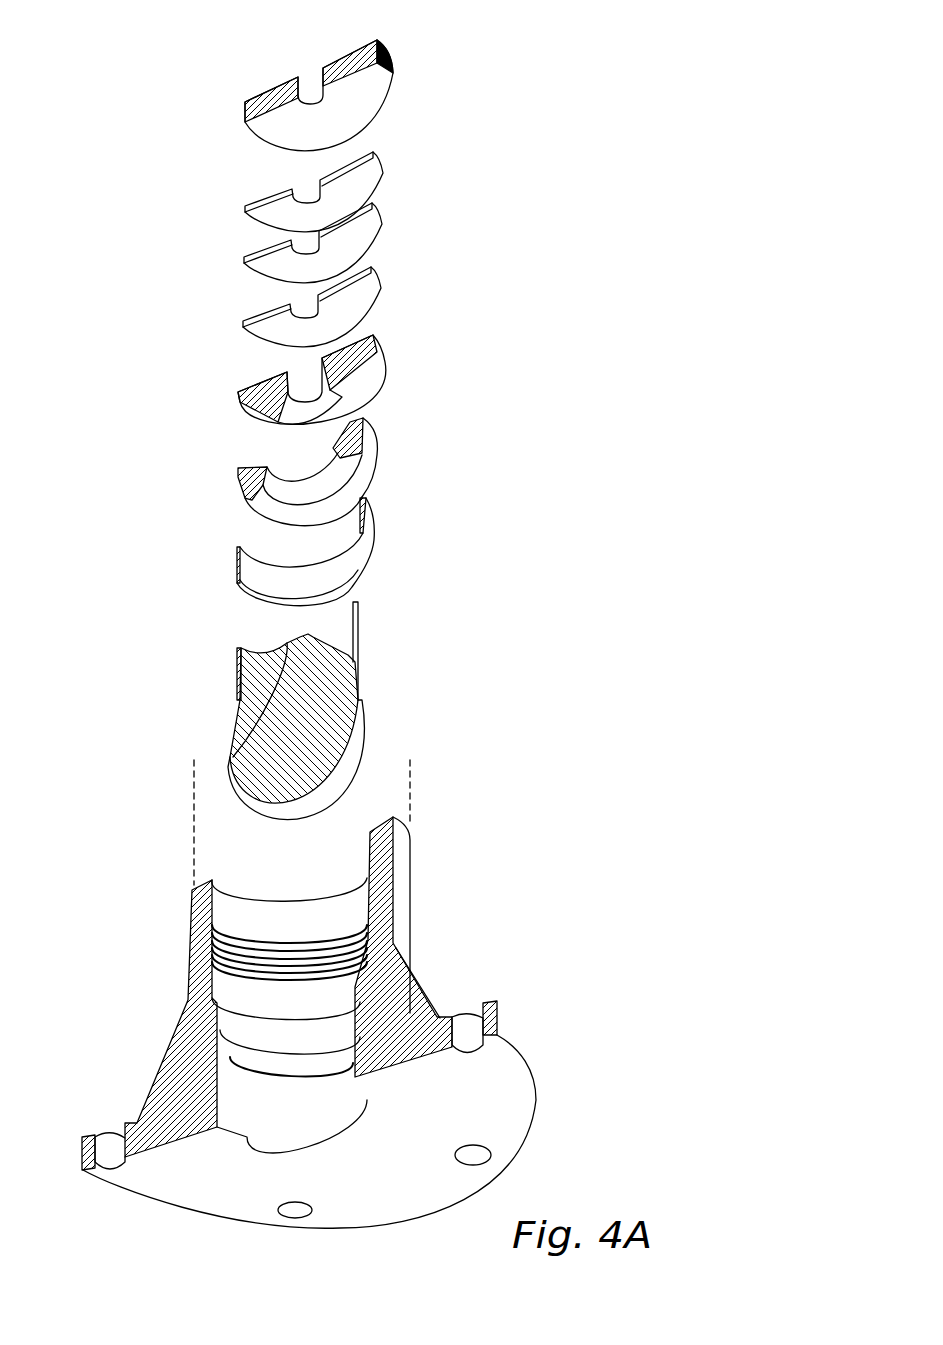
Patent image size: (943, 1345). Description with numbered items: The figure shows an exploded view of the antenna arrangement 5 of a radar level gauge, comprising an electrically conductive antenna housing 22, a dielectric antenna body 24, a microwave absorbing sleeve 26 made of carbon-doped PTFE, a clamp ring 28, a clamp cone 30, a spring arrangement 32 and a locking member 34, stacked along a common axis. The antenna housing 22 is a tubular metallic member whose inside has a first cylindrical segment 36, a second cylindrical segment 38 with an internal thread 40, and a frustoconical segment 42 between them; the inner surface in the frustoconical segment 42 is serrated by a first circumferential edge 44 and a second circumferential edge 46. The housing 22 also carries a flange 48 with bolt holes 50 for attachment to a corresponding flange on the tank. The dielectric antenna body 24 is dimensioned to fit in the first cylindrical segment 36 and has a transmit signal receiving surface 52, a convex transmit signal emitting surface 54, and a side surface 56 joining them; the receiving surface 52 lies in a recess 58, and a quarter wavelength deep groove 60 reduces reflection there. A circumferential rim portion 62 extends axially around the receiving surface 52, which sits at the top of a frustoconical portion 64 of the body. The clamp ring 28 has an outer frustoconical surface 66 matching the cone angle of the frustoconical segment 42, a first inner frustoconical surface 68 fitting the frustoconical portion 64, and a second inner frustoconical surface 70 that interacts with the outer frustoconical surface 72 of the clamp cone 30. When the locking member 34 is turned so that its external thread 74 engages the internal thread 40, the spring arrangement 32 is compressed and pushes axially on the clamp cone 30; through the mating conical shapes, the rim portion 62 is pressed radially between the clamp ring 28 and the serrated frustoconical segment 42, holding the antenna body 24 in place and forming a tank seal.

The antenna arrangement 5 is at (540, 990).
The antenna housing 22 is at (455, 920).
The dielectric antenna body 24 is at (390, 672).
The sleeve 26 is at (238, 565).
The clamp ring 28 is at (388, 445).
The clamp cone 30 is at (400, 350).
The spring arrangement 32 is at (373, 298).
The locking member 34 is at (368, 98).
The first cylindrical segment 36 is at (292, 1124).
The second cylindrical segment 38 is at (289, 945).
The internal thread 40 is at (368, 876).
The frustoconical segment 42 is at (303, 1030).
The first circumferential edge 44 is at (222, 1028).
The second circumferential edge 46 is at (215, 1003).
The flange 48 is at (82, 1137).
The bolt holes 50 is at (113, 1130).
The transmit signal receiving surface 52 is at (283, 641).
The convex transmit signal emitting surface 54 is at (292, 816).
The side surface 56 is at (228, 730).
The recess 58 is at (304, 632).
The groove 60 is at (232, 748).
The circumferential rim portion 62 is at (362, 646).
The frustoconical portion 64 is at (340, 640).
The outer frustoconical surface 66 is at (243, 490).
The first inner frustoconical surface 68 is at (375, 530).
The second inner frustoconical surface 70 is at (260, 466).
The outer frustoconical surface 72 is at (248, 416).
The external thread 74 is at (392, 58).